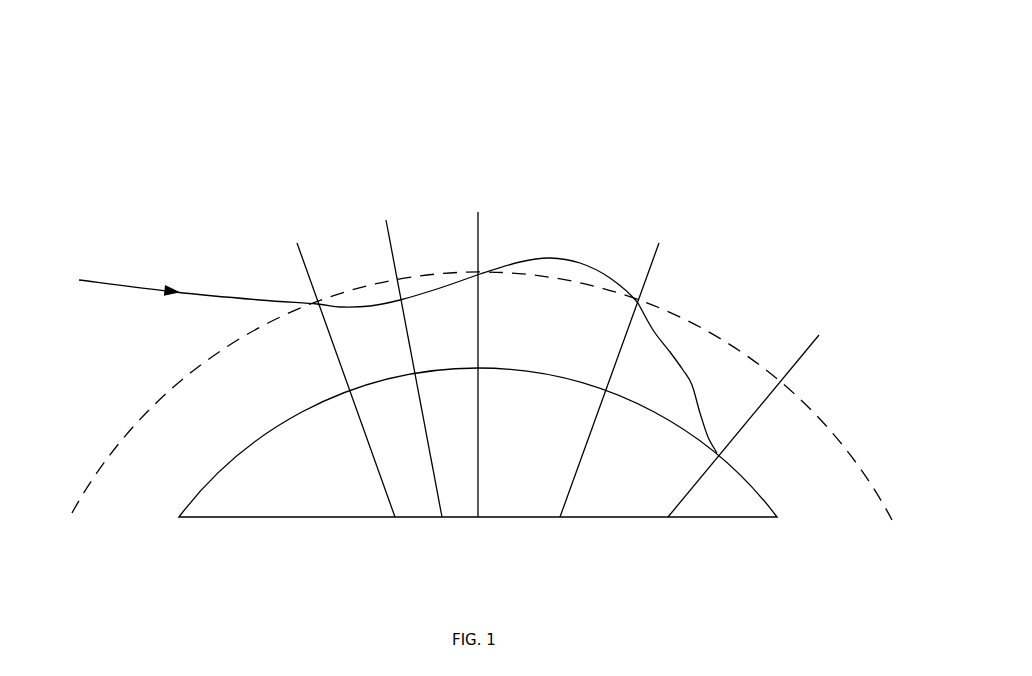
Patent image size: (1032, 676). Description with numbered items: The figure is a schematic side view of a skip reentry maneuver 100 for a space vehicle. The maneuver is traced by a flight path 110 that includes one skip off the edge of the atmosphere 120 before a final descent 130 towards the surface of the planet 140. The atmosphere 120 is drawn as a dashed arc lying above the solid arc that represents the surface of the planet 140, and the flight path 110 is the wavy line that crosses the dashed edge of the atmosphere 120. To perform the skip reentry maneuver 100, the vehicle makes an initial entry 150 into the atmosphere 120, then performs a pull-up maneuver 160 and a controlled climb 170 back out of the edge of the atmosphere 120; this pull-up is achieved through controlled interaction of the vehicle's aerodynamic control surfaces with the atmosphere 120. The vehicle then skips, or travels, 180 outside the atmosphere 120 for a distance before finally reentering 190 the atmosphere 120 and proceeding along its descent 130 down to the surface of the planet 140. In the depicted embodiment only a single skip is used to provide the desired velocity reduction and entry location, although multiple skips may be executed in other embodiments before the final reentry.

The skip reentry maneuver 100 is at (788, 78).
The flight path 110 is at (259, 286).
The atmosphere 120 is at (118, 433).
The final descent 130 is at (688, 368).
The surface of the planet 140 is at (265, 450).
The initial entry 150 is at (300, 296).
The pull-up maneuver 160 is at (351, 283).
The controlled climb 170 is at (435, 255).
The skip 180 is at (564, 257).
The final reentry 190 is at (660, 293).